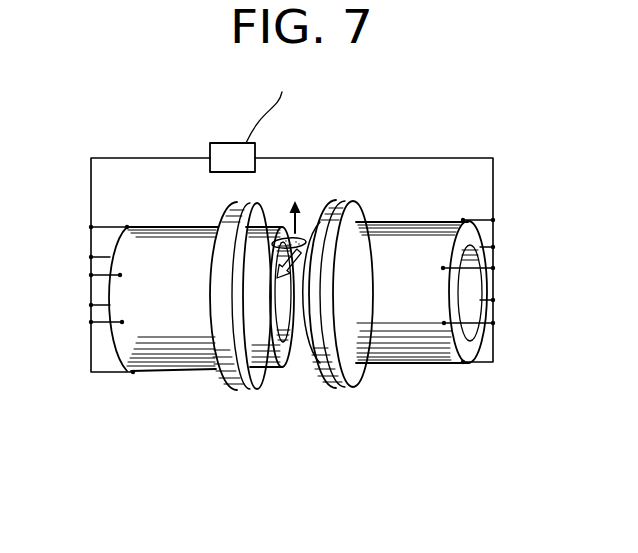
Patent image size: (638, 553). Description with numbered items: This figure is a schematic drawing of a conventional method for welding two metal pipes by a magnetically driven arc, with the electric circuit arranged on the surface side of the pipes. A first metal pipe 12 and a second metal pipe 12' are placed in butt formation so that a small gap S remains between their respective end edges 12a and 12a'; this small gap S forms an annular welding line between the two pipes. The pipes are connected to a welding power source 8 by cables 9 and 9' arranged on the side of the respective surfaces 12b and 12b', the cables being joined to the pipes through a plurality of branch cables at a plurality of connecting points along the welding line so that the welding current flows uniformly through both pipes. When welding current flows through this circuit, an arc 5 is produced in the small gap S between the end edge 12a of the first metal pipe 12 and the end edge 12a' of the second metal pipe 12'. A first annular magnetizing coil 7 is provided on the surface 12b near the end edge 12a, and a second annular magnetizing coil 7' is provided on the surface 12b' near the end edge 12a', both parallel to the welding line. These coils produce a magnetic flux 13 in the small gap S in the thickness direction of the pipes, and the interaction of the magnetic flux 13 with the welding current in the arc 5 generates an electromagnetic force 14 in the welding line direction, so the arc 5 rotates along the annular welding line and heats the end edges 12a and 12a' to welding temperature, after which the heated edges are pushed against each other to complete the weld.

The arc 5 is at (304, 238).
The first annular magnetizing coil 7 is at (341, 270).
The second annular magnetizing coil 7' is at (229, 281).
The welding power source 8 is at (231, 142).
The cable 9 is at (375, 230).
The cable 9' is at (149, 236).
The first metal pipe 12 is at (421, 328).
The second metal pipe 12' is at (195, 331).
The end edge 12a is at (328, 327).
The end edge 12a' is at (266, 330).
The surface 12b is at (412, 204).
The surface 12b' is at (204, 205).
The magnetic flux 13 is at (287, 207).
The electromagnetic force 14 is at (276, 273).
The small gap S is at (302, 351).